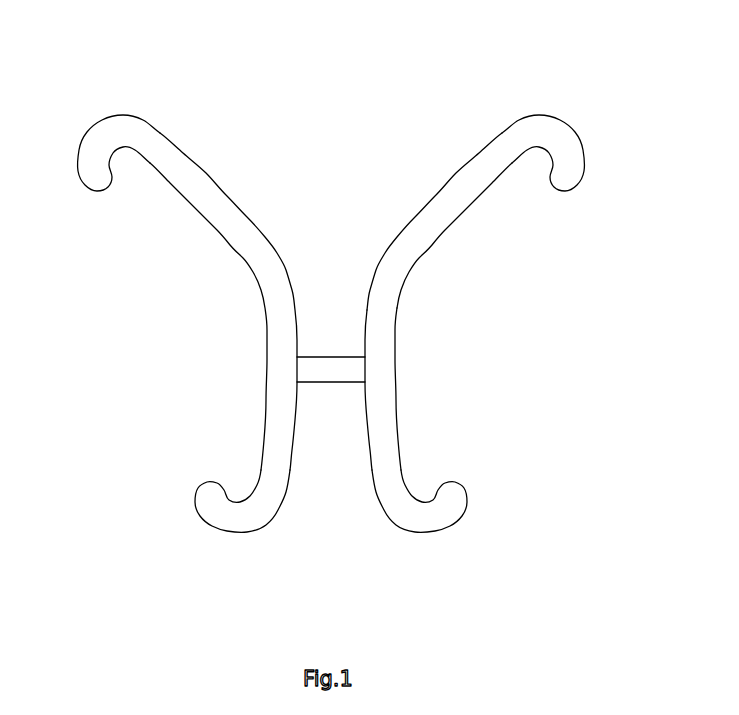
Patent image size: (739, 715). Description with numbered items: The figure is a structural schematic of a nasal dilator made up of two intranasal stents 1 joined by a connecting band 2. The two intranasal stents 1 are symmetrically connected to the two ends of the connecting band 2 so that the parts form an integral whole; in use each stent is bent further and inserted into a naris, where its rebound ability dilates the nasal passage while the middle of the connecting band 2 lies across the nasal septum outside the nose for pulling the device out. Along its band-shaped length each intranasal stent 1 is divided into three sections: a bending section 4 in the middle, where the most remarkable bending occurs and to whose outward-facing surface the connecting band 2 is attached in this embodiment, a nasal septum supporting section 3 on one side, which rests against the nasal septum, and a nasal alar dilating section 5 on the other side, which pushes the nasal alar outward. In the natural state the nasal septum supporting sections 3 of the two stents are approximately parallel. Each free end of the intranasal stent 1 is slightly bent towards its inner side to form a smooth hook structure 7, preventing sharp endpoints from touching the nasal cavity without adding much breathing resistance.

The intranasal stent 1 is at (331, 318).
The connecting band 2 is at (343, 377).
The nasal septum supporting section 3 is at (390, 462).
The bending section 4 is at (402, 253).
The nasal alar dilating section 5 is at (492, 158).
The hook structure 7 is at (98, 175).